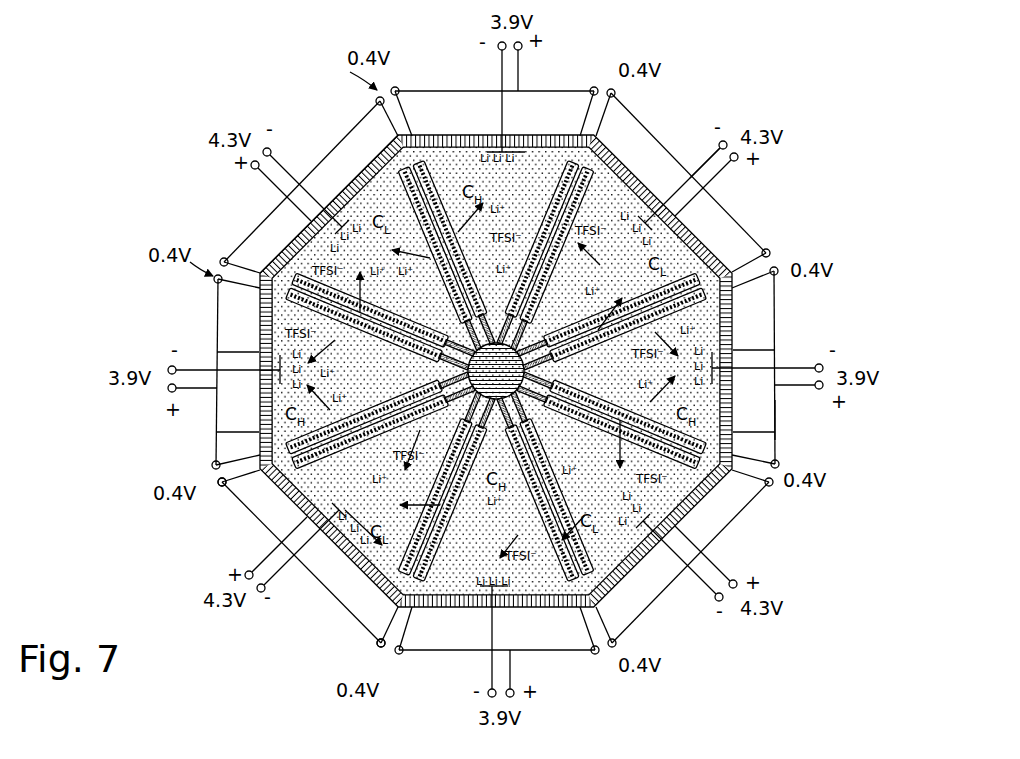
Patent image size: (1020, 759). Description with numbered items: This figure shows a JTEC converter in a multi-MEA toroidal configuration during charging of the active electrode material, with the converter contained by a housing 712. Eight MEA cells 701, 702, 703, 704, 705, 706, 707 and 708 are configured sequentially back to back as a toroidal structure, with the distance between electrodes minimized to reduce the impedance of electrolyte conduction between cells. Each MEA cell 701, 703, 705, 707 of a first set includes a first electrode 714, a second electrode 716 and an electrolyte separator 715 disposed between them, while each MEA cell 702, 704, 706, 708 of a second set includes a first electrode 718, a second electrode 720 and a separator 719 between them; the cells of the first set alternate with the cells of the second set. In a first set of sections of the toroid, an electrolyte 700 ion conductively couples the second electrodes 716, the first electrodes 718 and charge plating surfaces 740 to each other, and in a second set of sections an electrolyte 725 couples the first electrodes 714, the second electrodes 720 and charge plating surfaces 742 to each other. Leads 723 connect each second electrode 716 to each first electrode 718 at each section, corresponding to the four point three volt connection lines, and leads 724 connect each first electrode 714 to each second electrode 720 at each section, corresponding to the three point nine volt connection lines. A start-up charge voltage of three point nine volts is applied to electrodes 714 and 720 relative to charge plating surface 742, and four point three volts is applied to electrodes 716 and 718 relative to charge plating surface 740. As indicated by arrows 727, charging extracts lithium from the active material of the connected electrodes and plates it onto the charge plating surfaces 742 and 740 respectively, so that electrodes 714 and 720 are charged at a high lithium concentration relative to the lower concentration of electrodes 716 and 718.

The electrolyte 700 is at (442, 308).
The MEA cell 701 is at (600, 84).
The MEA cell 702 is at (782, 262).
The MEA cell 703 is at (784, 488).
The MEA cell 704 is at (599, 662).
The MEA cell 705 is at (396, 658).
The MEA cell 706 is at (209, 466).
The MEA cell 707 is at (219, 257).
The MEA cell 708 is at (377, 96).
The housing 712 is at (325, 212).
The first electrode 714 is at (545, 135).
The electrolyte separator 715 is at (376, 652).
The second electrode 716 is at (305, 240).
The first electrode 718 is at (356, 130).
The separator 719 is at (232, 490).
The second electrode 720 is at (430, 135).
The leads 723 is at (745, 196).
The leads 724 is at (775, 428).
The electrolyte 725 is at (622, 384).
The arrows 727 is at (333, 357).
The charge plating surfaces 740 is at (335, 190).
The charge plating surfaces 742 is at (485, 135).